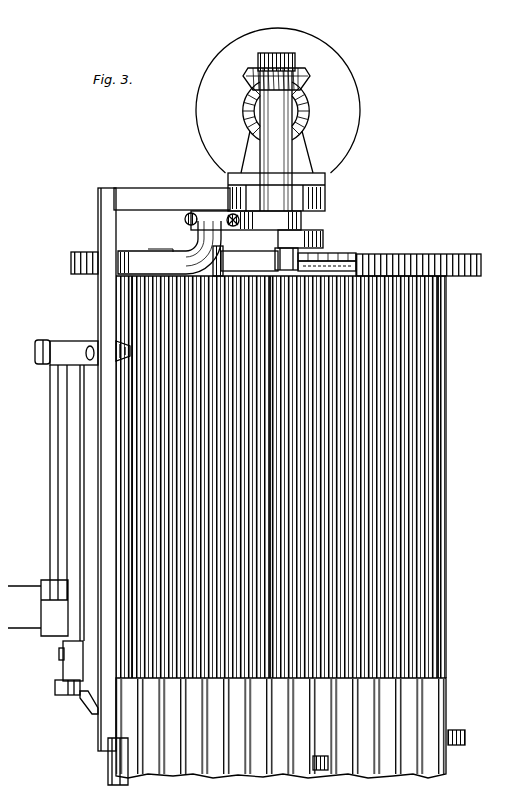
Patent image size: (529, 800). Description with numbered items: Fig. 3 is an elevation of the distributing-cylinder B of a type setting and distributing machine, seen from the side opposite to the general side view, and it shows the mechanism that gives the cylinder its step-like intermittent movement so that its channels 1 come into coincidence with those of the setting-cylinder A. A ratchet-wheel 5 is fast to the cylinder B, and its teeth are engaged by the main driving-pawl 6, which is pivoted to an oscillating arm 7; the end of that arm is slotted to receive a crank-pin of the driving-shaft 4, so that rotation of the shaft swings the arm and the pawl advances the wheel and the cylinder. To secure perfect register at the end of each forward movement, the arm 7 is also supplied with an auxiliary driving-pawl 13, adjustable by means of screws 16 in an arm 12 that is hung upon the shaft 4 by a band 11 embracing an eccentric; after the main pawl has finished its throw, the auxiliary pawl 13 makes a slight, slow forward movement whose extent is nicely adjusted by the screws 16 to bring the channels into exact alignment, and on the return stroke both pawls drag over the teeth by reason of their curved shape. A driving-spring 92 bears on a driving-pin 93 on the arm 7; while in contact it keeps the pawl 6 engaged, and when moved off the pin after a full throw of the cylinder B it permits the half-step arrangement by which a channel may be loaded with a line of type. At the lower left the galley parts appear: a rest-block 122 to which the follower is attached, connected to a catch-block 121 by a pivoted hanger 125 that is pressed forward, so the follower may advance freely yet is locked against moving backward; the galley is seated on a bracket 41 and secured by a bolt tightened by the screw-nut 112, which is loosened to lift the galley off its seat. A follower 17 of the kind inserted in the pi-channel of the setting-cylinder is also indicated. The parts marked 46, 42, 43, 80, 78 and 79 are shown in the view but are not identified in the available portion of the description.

The distributing-cylinder B is at (438, 496).
The setting-cylinder A is at (437, 699).
The channels 1 is at (152, 740).
The follower 17 is at (457, 729).
The ratchet-wheel 5 is at (80, 245).
The ribs 46 is at (125, 305).
The frame column 42 is at (113, 486).
The bracket frame 43 is at (116, 570).
The rest-block 122 is at (78, 661).
The pivoted hanger 125 is at (52, 648).
The catch-block 121 is at (55, 681).
The bracket 41 is at (82, 698).
The screw-nut 112 is at (110, 347).
The arm 12 is at (222, 196).
The hand wheel 80 is at (350, 95).
The driving-shaft 4 is at (270, 45).
The bevel gear 78 is at (240, 66).
The gear 79 is at (240, 108).
The band 11 is at (258, 201).
The screws 16 is at (180, 211).
The auxiliary driving-pawl 13 is at (169, 247).
The main driving-pawl 6 is at (245, 261).
The oscillating arm 7 is at (299, 250).
The driving-pin 93 is at (305, 247).
The driving-spring 92 is at (346, 258).